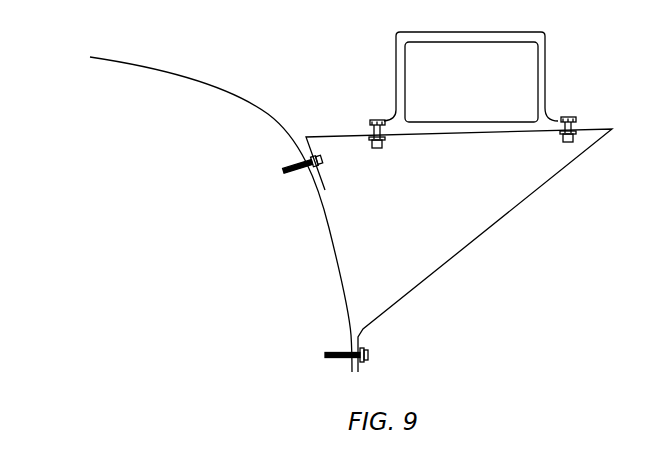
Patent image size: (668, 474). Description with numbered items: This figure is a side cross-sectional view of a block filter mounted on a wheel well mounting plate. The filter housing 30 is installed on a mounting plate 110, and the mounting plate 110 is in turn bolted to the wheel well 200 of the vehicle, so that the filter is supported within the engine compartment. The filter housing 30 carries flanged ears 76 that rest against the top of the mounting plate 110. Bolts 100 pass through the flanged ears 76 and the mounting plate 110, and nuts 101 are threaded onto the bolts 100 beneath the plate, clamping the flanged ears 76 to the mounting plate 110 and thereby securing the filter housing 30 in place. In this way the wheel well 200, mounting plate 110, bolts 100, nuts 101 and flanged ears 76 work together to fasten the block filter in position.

The wheel well 200 is at (221, 214).
The mounting plate 110 is at (447, 250).
The filter housing 30 is at (471, 77).
The flanged ears 76 is at (370, 124).
The nuts 101 is at (385, 147).
The bolts 100 is at (572, 115).